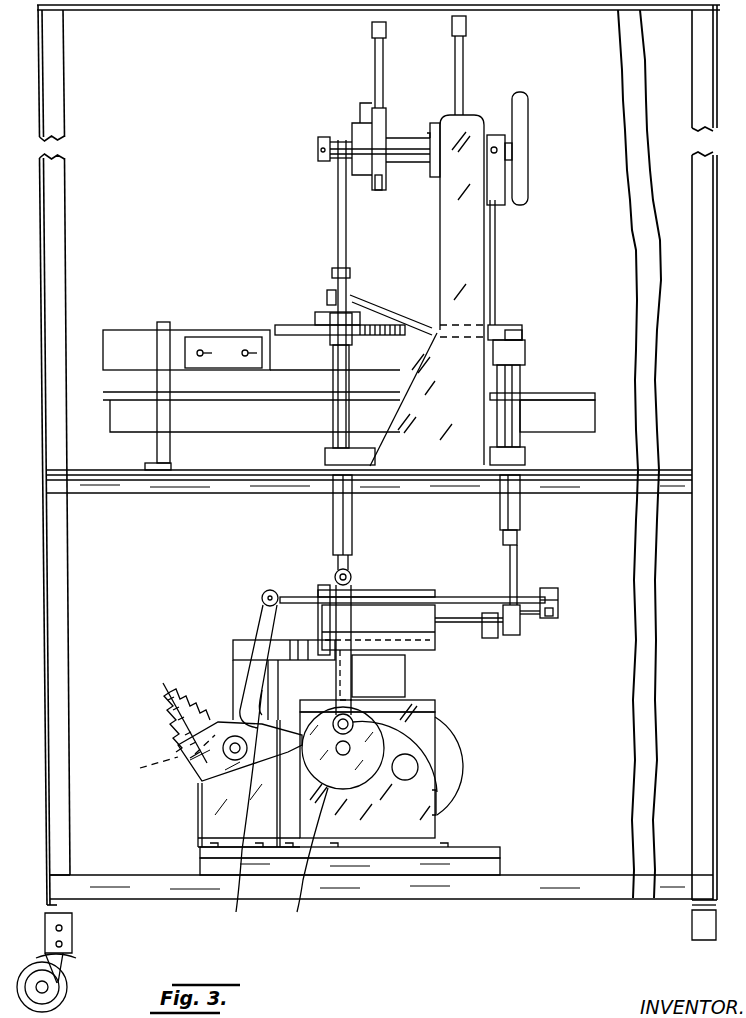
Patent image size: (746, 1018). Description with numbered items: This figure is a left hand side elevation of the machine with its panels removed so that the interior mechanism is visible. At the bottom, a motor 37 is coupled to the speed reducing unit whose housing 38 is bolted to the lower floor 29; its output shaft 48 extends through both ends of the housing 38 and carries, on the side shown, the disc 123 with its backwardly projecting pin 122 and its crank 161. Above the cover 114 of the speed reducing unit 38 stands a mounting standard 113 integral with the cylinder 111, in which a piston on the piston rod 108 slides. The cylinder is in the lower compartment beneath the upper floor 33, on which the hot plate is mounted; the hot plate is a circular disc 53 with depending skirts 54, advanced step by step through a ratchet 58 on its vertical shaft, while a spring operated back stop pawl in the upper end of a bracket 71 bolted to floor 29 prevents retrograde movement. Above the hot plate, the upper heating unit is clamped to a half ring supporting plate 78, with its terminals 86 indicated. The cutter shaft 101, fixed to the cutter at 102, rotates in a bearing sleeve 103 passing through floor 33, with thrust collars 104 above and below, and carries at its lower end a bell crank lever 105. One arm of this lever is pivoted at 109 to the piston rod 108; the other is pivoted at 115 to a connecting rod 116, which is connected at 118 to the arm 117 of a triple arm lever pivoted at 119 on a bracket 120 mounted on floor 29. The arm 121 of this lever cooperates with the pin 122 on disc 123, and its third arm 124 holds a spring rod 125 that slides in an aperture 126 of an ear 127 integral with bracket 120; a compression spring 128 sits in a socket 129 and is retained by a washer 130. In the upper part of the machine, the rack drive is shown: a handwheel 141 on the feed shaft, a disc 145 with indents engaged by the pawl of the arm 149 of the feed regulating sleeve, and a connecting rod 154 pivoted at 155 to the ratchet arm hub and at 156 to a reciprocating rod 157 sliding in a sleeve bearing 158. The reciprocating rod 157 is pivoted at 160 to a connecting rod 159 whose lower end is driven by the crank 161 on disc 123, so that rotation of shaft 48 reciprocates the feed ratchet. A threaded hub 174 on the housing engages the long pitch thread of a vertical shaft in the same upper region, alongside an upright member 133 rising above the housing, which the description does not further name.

The floor 29 is at (500, 855).
The floor 33 is at (205, 490).
The motor 37 is at (455, 750).
The speed reducing unit housing 38 is at (320, 835).
The shaft 48 is at (440, 800).
The circular disc 53 is at (570, 392).
The depending skirts 54 is at (557, 416).
The ratchet 58 is at (405, 655).
The bracket 71 is at (233, 662).
The supporting plate 78 is at (128, 330).
The terminals 86 is at (245, 350).
The shaft 101 is at (518, 572).
The cutter fixing 102 is at (520, 328).
The bearing sleeve 103 is at (521, 514).
The thrust collar 104 is at (500, 530).
The bell crank lever 105 is at (522, 628).
The piston rod 108 is at (450, 616).
The pivot 109 is at (498, 637).
The cylinder 111 is at (380, 590).
The mounting standard 113 is at (395, 678).
The cover 114 is at (436, 706).
The pivot 115 is at (552, 600).
The connecting rod 116 is at (558, 590).
The arm 117 is at (262, 603).
The pivot 118 is at (270, 590).
The pivot 119 is at (222, 760).
The bracket 120 is at (265, 785).
The arm 121 is at (235, 814).
The pin 122 is at (308, 863).
The disc 123 is at (343, 748).
The third arm 124 is at (195, 782).
The spring rod 125 is at (162, 685).
The aperture 126 is at (154, 757).
The ear 127 is at (185, 755).
The compression spring 128 is at (167, 700).
The socket 129 is at (183, 738).
The washer 130 is at (268, 670).
The column rod 133 is at (468, 26).
The handwheel 141 is at (530, 186).
The disc 145 is at (386, 130).
The arm 149 is at (372, 67).
The connecting rod 154 is at (347, 210).
The pivot 155 is at (318, 160).
The pivot 156 is at (350, 270).
The reciprocating rod 157 is at (352, 296).
The sleeve bearing 158 is at (333, 512).
The connecting rod 159 is at (345, 627).
The pivot 160 is at (352, 572).
The crank 161 is at (355, 720).
The hub 174 is at (326, 297).